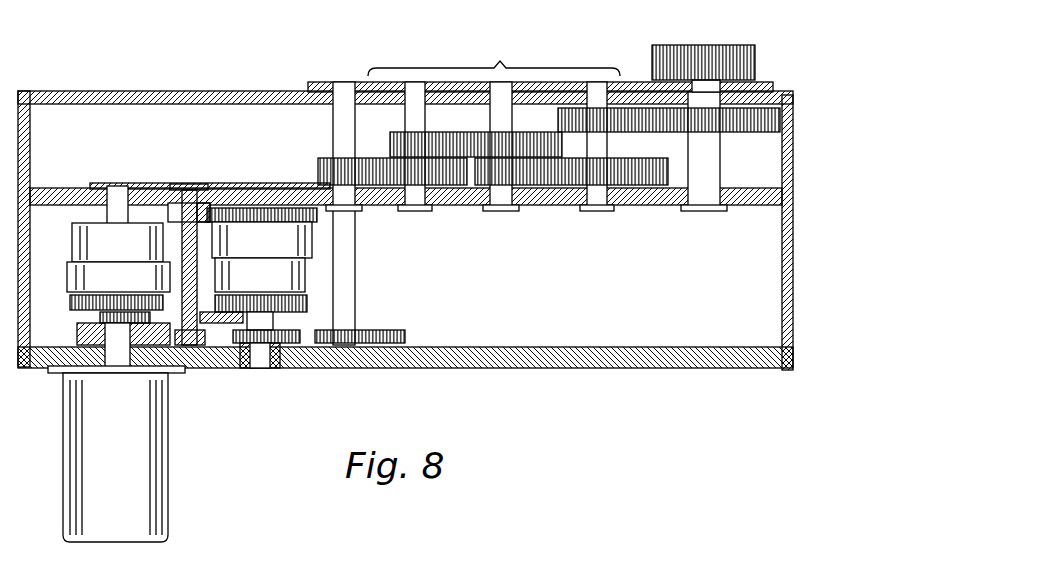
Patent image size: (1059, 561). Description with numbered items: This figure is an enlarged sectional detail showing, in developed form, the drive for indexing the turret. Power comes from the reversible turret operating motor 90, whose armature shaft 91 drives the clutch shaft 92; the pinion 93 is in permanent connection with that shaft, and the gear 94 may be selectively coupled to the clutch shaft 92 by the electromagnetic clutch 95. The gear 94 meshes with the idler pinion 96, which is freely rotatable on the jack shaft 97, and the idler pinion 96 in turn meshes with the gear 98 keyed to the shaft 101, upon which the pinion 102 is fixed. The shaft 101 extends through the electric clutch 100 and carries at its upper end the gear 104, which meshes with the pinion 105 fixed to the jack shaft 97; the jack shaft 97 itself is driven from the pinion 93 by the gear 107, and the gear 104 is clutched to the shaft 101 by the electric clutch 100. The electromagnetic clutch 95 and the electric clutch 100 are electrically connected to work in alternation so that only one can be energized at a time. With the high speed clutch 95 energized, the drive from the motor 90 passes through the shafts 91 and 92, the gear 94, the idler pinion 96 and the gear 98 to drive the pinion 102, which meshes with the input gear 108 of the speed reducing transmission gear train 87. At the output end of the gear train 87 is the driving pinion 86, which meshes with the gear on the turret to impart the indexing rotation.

The driving pinion 86 is at (672, 60).
The speed reducing transmission gear train 87 is at (500, 61).
The reversible turret operating motor 90 is at (160, 485).
The armature shaft 91 is at (115, 372).
The clutch shaft 92 is at (100, 333).
The pinion 93 is at (100, 317).
The gear 94 is at (70, 300).
The electromagnetic clutch 95 is at (72, 278).
The idler pinion 96 is at (208, 350).
The jack shaft 97 is at (182, 232).
The gear 98 is at (292, 305).
The electric clutch 100 is at (295, 272).
The shaft 101 is at (258, 368).
The pinion 102 is at (240, 348).
The gear 104 is at (292, 210).
The pinion 105 is at (184, 190).
The gear 107 is at (152, 385).
The input gear 108 is at (383, 341).